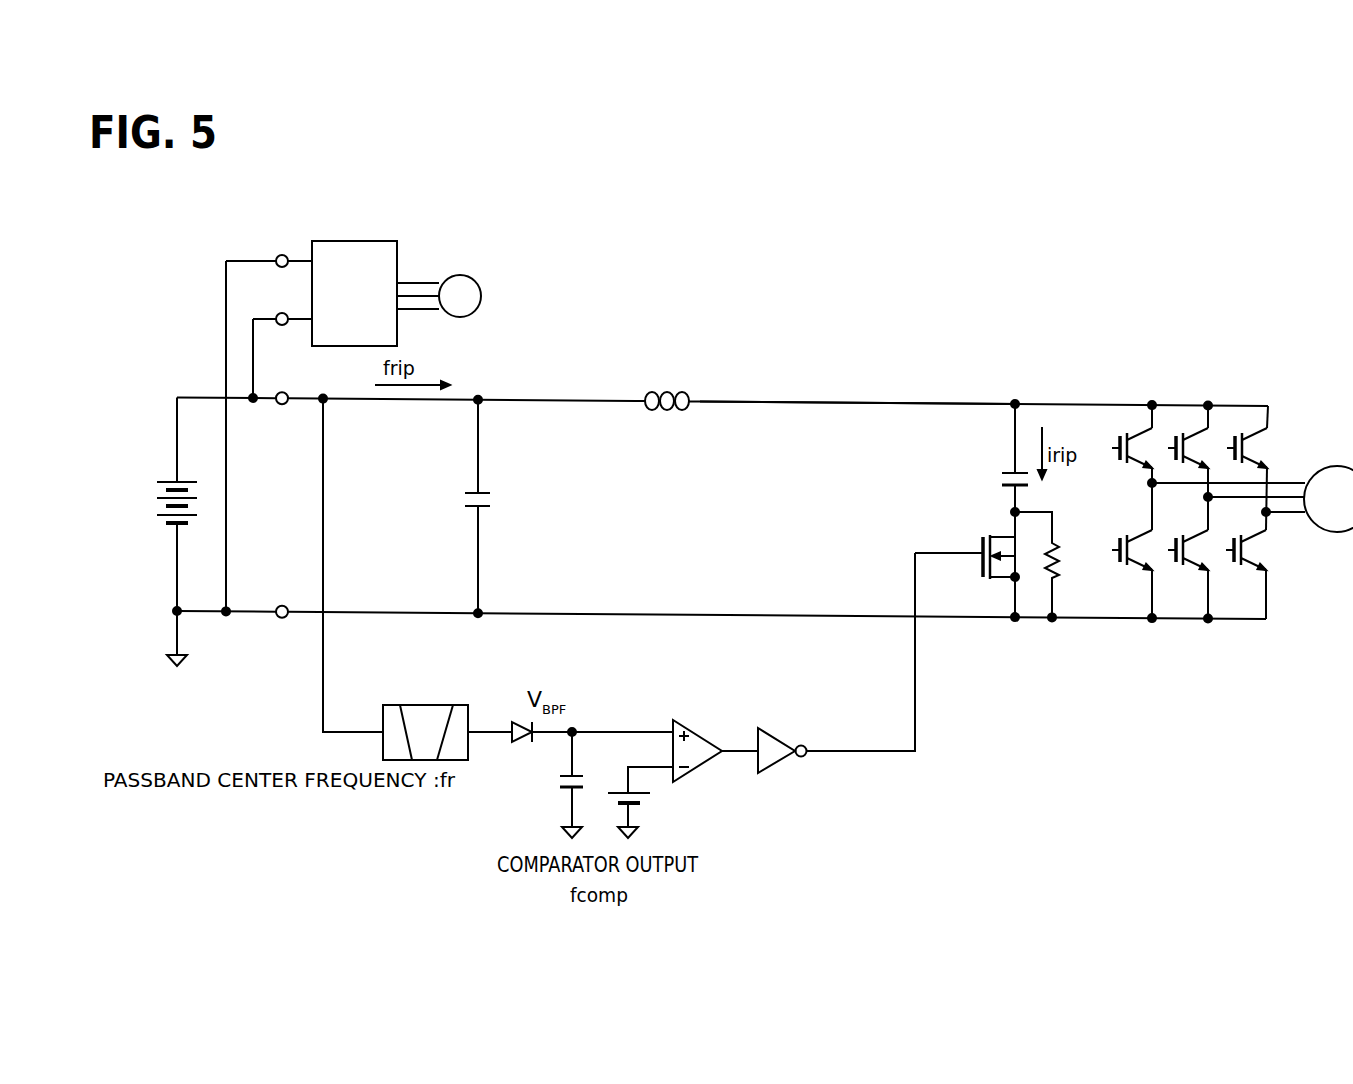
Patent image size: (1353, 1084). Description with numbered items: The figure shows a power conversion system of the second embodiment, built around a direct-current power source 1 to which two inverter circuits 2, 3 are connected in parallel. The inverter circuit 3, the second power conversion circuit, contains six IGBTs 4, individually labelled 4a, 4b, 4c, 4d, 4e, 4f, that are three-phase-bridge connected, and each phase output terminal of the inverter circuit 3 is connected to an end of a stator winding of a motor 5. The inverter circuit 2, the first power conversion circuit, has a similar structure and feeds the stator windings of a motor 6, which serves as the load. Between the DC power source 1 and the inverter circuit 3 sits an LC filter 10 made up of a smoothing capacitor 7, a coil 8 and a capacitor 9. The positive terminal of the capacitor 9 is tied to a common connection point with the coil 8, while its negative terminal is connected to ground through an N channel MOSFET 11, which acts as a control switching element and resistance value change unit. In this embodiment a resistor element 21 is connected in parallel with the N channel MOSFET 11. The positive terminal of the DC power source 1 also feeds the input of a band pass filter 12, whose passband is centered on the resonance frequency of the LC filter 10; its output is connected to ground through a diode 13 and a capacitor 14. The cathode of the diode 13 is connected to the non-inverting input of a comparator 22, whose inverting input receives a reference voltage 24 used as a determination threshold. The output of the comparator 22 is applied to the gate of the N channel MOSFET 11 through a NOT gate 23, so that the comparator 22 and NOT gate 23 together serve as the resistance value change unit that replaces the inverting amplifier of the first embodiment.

The DC power source 1 is at (155, 490).
The inverter circuit 2 is at (358, 240).
The inverter circuit 3 is at (1199, 497).
The IGBTs 4 is at (1229, 660).
The IGBT 4a is at (1112, 439).
The IGBT 4b is at (1112, 543).
The IGBT 4c is at (1187, 428).
The IGBT 4d is at (1187, 573).
The IGBT 4e is at (1262, 448).
The IGBT 4f is at (1262, 550).
The motor 5 is at (1334, 466).
The motor 6 is at (481, 283).
The smoothing capacitor 7 is at (492, 501).
The coil 8 is at (668, 391).
The capacitor 9 is at (999, 481).
The LC filter 10 is at (878, 377).
The N channel MOSFET 11 is at (980, 546).
The band pass filter 12 is at (427, 705).
The diode 13 is at (523, 743).
The capacitor 14 is at (553, 778).
The resistor element 21 is at (1065, 563).
The comparator 22 is at (702, 767).
The NOT gate 23 is at (773, 765).
The reference voltage 24 is at (647, 802).